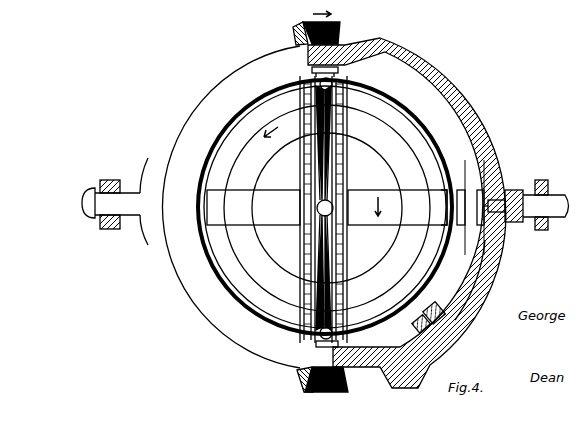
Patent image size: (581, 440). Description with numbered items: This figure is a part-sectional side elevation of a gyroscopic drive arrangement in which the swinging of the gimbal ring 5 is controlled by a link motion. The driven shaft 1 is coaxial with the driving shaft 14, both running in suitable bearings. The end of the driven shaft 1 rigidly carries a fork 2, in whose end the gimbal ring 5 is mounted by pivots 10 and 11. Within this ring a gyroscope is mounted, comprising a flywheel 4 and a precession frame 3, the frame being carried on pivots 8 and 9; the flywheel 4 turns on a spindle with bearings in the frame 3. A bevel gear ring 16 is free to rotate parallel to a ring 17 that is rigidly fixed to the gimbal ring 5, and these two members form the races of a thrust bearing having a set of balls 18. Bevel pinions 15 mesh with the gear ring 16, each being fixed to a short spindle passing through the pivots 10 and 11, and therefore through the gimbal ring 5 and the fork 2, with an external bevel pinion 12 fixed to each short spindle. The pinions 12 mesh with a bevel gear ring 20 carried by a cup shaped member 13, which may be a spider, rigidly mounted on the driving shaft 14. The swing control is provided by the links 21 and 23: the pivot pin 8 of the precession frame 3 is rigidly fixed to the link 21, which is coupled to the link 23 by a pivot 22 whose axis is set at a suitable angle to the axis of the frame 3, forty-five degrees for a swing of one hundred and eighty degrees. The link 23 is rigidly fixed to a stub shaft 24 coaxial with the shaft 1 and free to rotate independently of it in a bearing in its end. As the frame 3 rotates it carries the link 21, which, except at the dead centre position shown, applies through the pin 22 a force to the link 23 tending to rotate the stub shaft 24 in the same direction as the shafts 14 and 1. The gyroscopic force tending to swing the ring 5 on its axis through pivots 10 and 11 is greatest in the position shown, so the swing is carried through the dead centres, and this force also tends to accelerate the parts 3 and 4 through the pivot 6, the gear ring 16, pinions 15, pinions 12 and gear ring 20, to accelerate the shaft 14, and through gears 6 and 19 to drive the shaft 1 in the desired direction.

The driven shaft 1 is at (560, 197).
The fork 2 is at (448, 70).
The precession frame 3 is at (443, 226).
The flywheel 4 is at (405, 150).
The gimbal ring 5 is at (416, 112).
The pivot 6 is at (317, 208).
The pivot pin 8 is at (462, 190).
The pivot 9 is at (200, 210).
The pivot 10 is at (312, 70).
The pivot 11 is at (316, 344).
The external bevel pinion 12 is at (341, 30).
The cup shaped member 13 is at (249, 40).
The driving shaft 14 is at (120, 196).
The bevel pinion 15 is at (334, 86).
The bevel gear ring 16 is at (312, 262).
The ring 17 is at (300, 95).
The balls 18 is at (312, 251).
The gear 19 is at (347, 101).
The bevel gear ring 20 is at (300, 28).
The link 21 is at (506, 178).
The pivot 22 is at (422, 322).
The link 23 is at (472, 266).
The stub shaft 24 is at (515, 194).